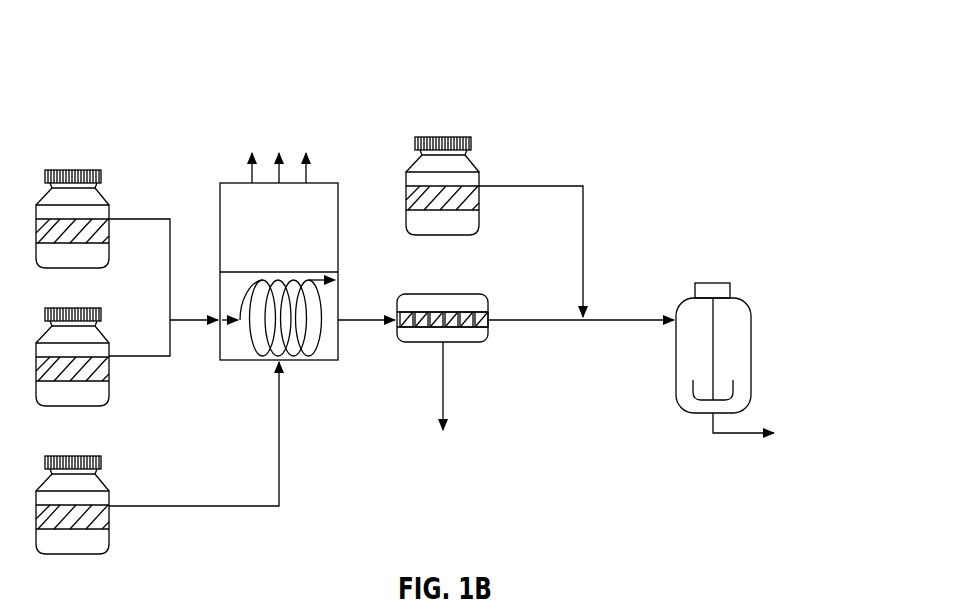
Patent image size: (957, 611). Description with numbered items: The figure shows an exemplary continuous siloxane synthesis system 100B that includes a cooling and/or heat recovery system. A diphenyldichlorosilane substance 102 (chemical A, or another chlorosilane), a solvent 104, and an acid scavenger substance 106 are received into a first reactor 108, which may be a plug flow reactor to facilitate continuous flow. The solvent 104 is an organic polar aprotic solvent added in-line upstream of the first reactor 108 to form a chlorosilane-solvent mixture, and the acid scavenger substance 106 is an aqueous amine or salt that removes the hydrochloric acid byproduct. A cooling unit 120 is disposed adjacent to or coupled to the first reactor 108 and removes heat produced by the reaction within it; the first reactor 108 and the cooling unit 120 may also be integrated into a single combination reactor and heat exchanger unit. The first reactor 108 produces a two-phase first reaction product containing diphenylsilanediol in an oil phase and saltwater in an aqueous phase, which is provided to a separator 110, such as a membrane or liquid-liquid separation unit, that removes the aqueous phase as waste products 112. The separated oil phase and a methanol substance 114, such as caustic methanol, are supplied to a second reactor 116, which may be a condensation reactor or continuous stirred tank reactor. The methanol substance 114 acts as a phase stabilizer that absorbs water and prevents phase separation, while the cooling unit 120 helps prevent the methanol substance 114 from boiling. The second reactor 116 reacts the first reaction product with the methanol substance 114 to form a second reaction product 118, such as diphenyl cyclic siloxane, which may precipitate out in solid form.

The continuous siloxane synthesis system 100B is at (712, 78).
The diphenyldichlorosilane substance 102 is at (85, 168).
The solvent 104 is at (85, 306).
The acid scavenger substance 106 is at (85, 454).
The first reactor 108 is at (308, 361).
The separator 110 is at (443, 293).
The waste products 112 is at (456, 434).
The methanol substance 114 is at (449, 135).
The second reactor 116 is at (711, 282).
The second reaction product 118 is at (818, 418).
The cooling unit 120 is at (370, 160).